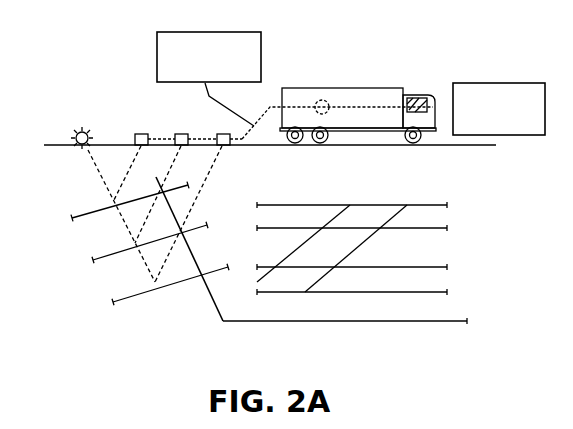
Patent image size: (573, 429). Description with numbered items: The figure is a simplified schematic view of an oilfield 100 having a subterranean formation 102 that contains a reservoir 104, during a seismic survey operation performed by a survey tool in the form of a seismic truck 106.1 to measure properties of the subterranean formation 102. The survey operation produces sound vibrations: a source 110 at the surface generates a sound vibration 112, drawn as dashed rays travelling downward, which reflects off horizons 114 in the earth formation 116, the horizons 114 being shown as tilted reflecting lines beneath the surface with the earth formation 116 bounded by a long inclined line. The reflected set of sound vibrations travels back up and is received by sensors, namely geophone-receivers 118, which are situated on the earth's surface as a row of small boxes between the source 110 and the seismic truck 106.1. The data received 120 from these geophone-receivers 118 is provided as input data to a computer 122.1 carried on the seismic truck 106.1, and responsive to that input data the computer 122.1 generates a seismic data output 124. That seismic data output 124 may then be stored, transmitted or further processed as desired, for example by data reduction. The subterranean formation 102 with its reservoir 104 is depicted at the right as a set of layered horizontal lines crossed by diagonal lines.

The oilfield 100 is at (462, 58).
The subterranean formation 102 is at (432, 193).
The reservoir 104 is at (420, 259).
The seismic truck 106.1 is at (383, 88).
The source 110 is at (76, 132).
The sound vibration 112 is at (126, 183).
The horizons 114 is at (78, 214).
The earth formation 116 is at (212, 289).
The geophone-receivers 118 is at (222, 133).
The data received 120 is at (185, 31).
The computer 122.1 is at (322, 100).
The seismic data output 124 is at (518, 83).